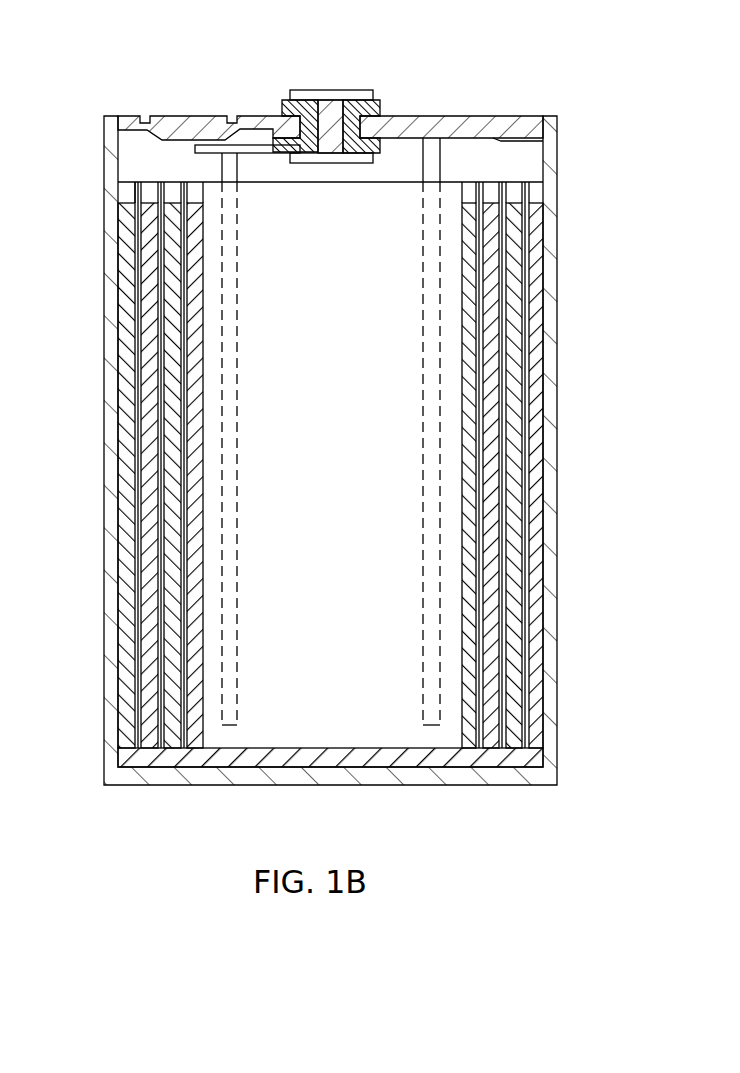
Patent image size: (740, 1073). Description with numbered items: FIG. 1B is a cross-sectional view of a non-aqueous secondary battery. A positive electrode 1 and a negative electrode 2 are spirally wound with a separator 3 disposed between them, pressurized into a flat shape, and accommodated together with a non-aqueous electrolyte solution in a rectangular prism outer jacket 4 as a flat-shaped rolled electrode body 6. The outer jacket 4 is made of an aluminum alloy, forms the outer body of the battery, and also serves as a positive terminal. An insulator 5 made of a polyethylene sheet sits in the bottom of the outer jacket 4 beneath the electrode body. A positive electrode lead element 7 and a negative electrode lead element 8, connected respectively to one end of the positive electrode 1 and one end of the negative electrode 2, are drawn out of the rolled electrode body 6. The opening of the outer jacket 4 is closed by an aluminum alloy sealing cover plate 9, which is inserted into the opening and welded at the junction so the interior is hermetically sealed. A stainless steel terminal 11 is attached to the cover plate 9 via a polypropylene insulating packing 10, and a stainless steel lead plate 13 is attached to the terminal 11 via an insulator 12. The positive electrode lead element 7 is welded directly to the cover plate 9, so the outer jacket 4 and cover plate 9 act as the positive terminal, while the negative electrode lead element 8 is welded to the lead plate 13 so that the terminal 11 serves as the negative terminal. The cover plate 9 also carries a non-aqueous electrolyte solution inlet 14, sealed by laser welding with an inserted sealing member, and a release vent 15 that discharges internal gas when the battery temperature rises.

The positive electrode 1 is at (127, 400).
The negative electrode 2 is at (150, 488).
The separator 3 is at (140, 453).
The outer jacket 4 is at (552, 463).
The insulator 5 is at (320, 760).
The flat-shaped rolled electrode body 6 is at (293, 290).
The positive electrode lead element 7 is at (433, 163).
The negative electrode lead element 8 is at (230, 167).
The sealing cover plate 9 is at (467, 118).
The insulating packing 10 is at (380, 110).
The terminal 11 is at (330, 100).
The insulator 12 is at (278, 140).
The lead plate 13 is at (252, 146).
The non-aqueous electrolyte solution inlet 14 is at (515, 118).
The release vent 15 is at (195, 117).